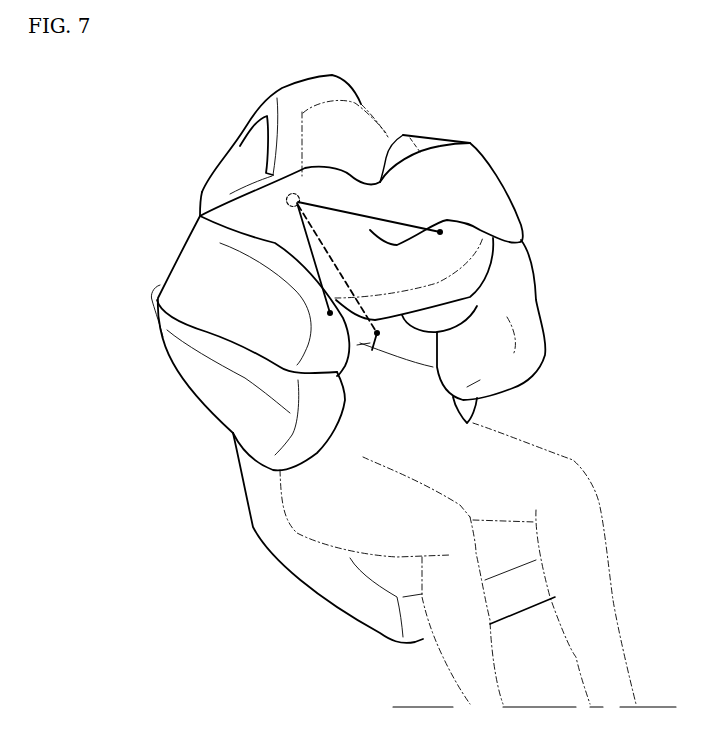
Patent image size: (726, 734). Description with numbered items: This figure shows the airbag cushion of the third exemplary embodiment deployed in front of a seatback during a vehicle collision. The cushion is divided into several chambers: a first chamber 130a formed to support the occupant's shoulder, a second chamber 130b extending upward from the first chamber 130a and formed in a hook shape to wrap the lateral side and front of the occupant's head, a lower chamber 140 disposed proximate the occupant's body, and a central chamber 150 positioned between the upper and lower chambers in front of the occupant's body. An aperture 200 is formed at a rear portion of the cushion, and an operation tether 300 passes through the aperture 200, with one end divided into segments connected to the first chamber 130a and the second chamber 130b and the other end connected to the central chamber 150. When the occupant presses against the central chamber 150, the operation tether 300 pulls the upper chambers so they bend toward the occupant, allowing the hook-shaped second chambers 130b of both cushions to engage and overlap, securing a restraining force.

The aperture 200 is at (263, 203).
The operation tether 300 is at (300, 239).
The first chamber 130a is at (184, 297).
The second chamber 130b is at (455, 243).
The lower chamber 140 is at (217, 389).
The central chamber 150 is at (433, 367).